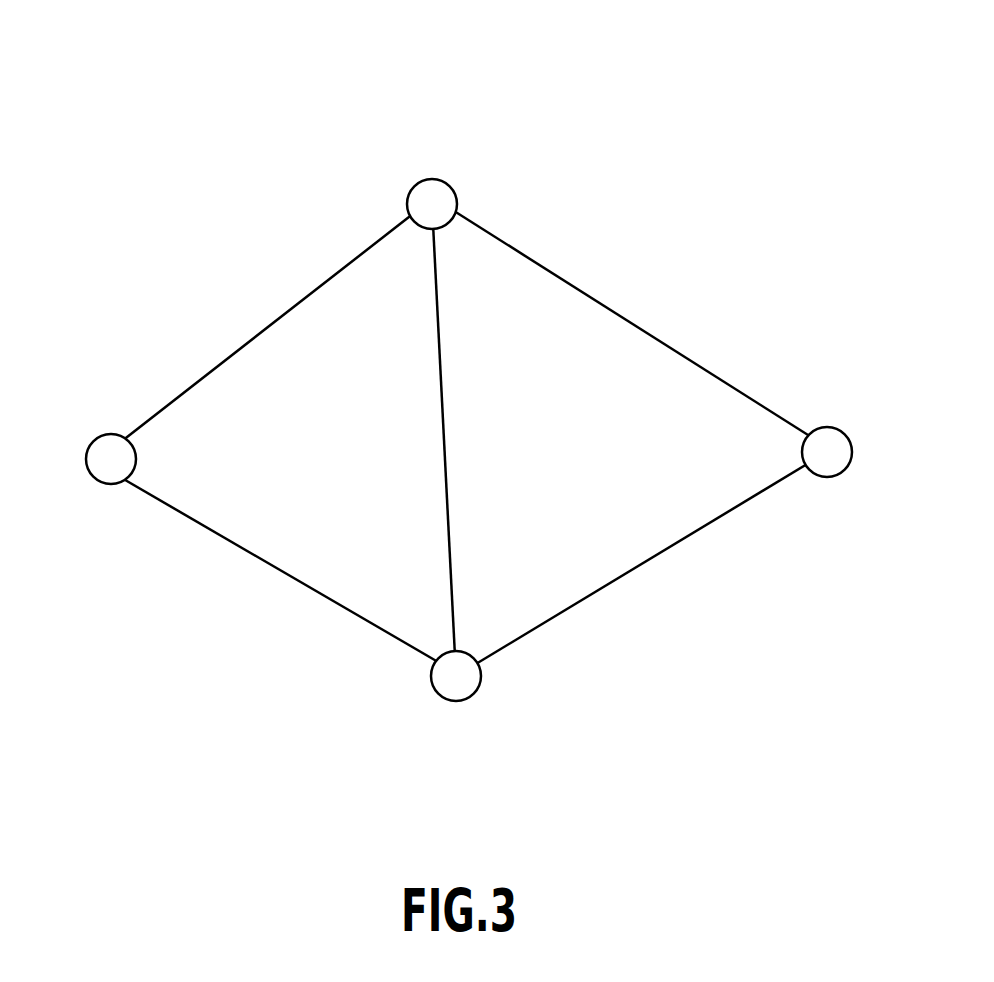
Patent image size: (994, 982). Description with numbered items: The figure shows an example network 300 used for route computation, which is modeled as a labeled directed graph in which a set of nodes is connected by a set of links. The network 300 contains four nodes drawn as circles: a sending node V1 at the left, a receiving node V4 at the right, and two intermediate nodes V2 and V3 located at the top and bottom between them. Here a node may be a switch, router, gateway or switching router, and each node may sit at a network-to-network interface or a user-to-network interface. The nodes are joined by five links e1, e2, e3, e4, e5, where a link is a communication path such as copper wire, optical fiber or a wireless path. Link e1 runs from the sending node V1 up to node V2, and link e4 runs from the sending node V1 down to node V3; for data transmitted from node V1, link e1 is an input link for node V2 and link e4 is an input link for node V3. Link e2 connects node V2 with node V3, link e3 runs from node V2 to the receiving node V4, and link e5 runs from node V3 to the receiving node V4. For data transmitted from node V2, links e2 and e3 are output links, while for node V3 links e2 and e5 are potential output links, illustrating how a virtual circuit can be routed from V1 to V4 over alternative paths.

The network 300 is at (308, 55).
The sending node V1 is at (88, 459).
The node V2 is at (432, 182).
The node V3 is at (456, 702).
The receiving node V4 is at (848, 452).
The link e1 is at (274, 323).
The link e2 is at (441, 350).
The link e3 is at (615, 313).
The link e4 is at (283, 572).
The link e5 is at (592, 598).